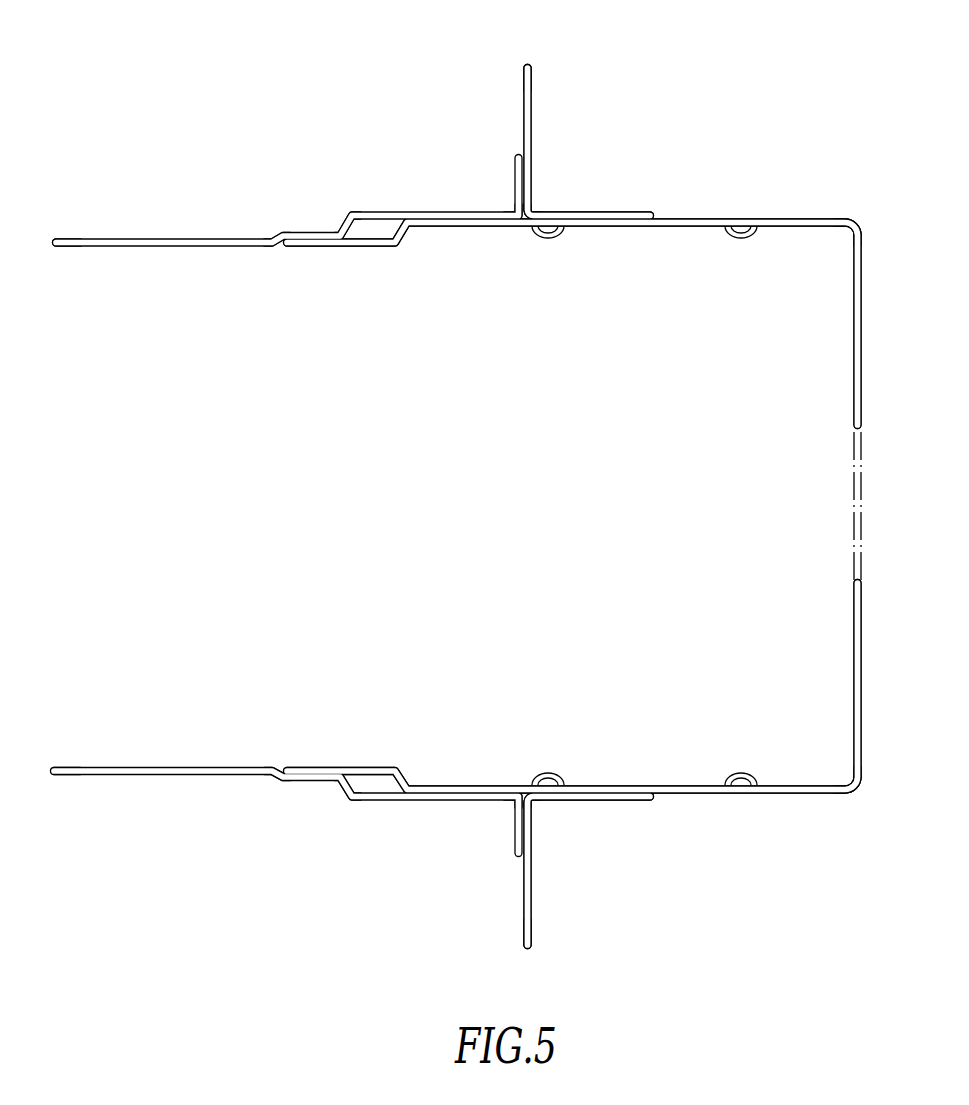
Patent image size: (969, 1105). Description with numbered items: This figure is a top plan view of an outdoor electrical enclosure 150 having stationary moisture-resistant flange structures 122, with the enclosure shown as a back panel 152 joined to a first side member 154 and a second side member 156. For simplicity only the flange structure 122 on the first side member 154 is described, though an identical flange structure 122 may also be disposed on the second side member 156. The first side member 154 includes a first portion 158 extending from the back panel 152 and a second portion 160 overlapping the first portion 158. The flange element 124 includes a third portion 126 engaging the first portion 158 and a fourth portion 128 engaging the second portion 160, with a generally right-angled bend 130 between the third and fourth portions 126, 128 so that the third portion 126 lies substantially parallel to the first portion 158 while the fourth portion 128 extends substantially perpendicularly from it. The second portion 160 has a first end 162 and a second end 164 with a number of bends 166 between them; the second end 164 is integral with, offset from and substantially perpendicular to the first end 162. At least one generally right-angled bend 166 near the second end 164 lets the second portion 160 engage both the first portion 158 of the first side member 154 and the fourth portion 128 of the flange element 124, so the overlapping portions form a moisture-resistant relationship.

The moisture-resistant flange structure 122 is at (451, 79).
The flange element 124 is at (546, 62).
The third portion 126 is at (625, 212).
The fourth portion 128 is at (532, 105).
The right-angled bend 130 is at (535, 211).
The outdoor electrical enclosure 150 is at (381, 873).
The back panel 152 is at (853, 685).
The first side member 154 is at (460, 740).
The second side member 156 is at (489, 272).
The first portion 158 is at (795, 228).
The second portion 160 is at (188, 247).
The first end 162 is at (57, 220).
The second end 164 is at (498, 160).
The bends 166 is at (345, 228).